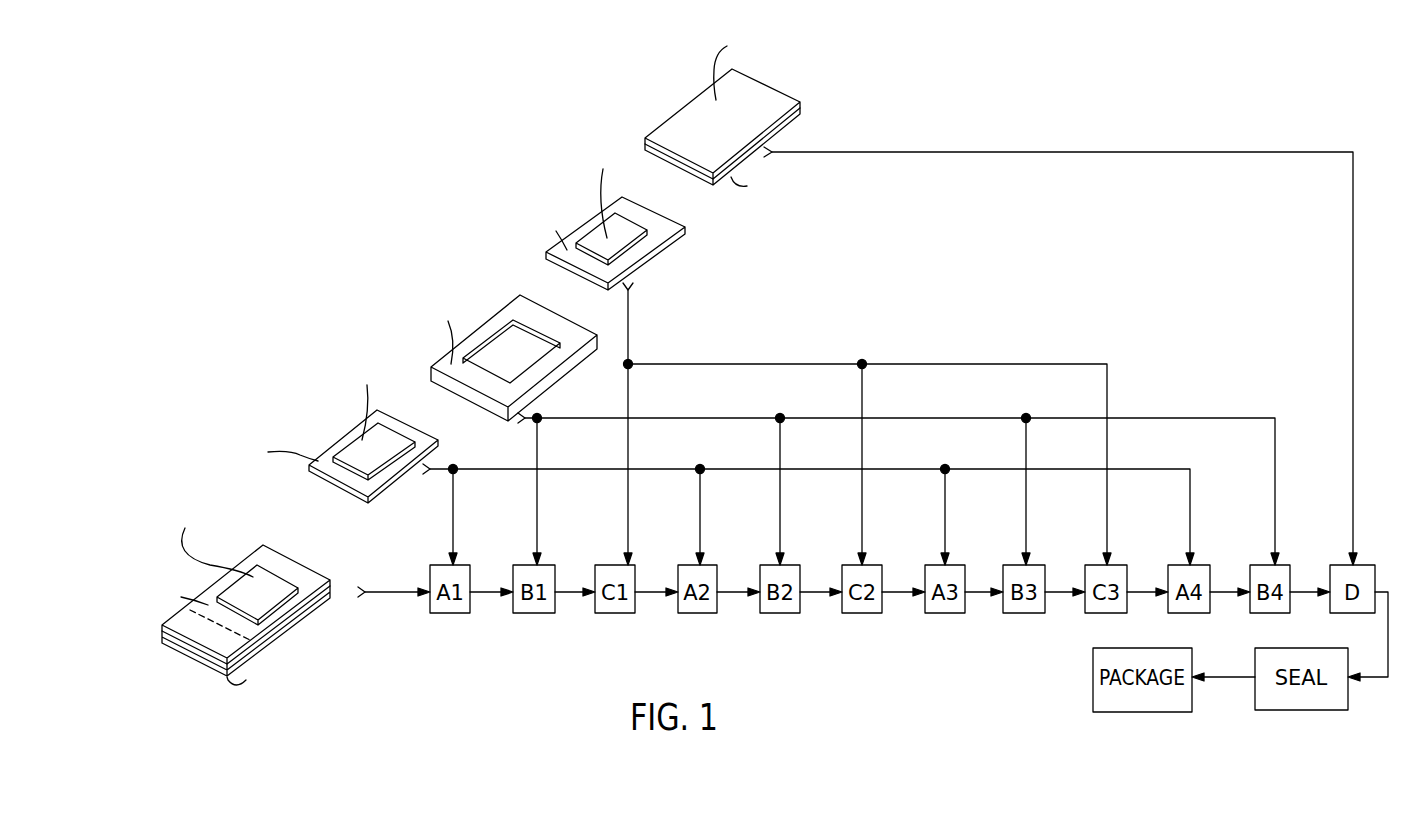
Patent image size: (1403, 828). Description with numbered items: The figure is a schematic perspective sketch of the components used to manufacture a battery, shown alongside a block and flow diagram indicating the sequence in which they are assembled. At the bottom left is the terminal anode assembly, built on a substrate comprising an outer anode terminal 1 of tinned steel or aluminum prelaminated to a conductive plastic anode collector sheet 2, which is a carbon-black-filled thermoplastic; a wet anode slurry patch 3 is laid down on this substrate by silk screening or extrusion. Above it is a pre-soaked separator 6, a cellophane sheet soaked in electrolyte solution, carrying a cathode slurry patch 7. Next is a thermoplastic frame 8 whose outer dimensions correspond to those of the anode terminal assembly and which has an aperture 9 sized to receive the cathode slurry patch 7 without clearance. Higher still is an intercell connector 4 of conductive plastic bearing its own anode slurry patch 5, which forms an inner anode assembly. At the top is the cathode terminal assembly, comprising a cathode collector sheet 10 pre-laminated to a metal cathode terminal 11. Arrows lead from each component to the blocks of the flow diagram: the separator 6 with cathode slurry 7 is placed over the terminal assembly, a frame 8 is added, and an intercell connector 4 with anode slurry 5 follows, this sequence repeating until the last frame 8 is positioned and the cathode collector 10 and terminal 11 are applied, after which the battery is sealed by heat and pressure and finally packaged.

The anode terminal 1 is at (283, 638).
The anode collector sheet 2 is at (205, 605).
The anode slurry patch 3 is at (248, 590).
The intercell connector 4 is at (589, 264).
The anode slurry patch 5 is at (617, 224).
The separator 6 is at (370, 483).
The cathode slurry patch 7 is at (380, 432).
The frame 8 is at (489, 358).
The aperture 9 is at (490, 344).
The cathode collector sheet 10 is at (722, 178).
The cathode terminal 11 is at (761, 93).